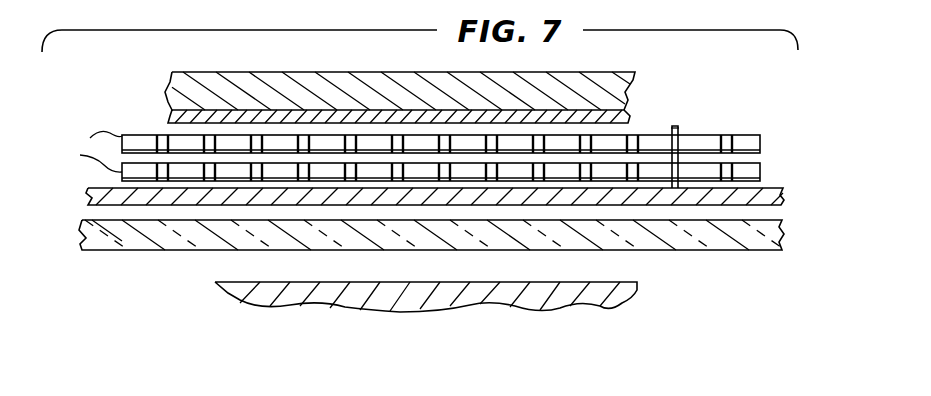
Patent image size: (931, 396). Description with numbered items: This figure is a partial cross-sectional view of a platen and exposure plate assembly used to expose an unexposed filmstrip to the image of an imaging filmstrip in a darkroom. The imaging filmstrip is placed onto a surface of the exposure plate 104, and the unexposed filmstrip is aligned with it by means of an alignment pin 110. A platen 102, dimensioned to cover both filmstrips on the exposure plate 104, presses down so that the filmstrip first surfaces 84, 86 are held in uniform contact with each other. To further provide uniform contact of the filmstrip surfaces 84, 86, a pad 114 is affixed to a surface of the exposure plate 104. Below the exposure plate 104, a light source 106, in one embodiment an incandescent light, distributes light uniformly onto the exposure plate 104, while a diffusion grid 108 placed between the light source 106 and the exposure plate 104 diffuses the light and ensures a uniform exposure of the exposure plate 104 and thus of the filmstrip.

The platen 102 is at (603, 74).
The pad 114 is at (167, 117).
The filmstrip first surface 86 is at (508, 157).
The filmstrip first surface 84 is at (733, 163).
The alignment pin 110 is at (675, 126).
The exposure plate 104 is at (97, 189).
The diffusion grid 108 is at (173, 237).
The light source 106 is at (610, 297).